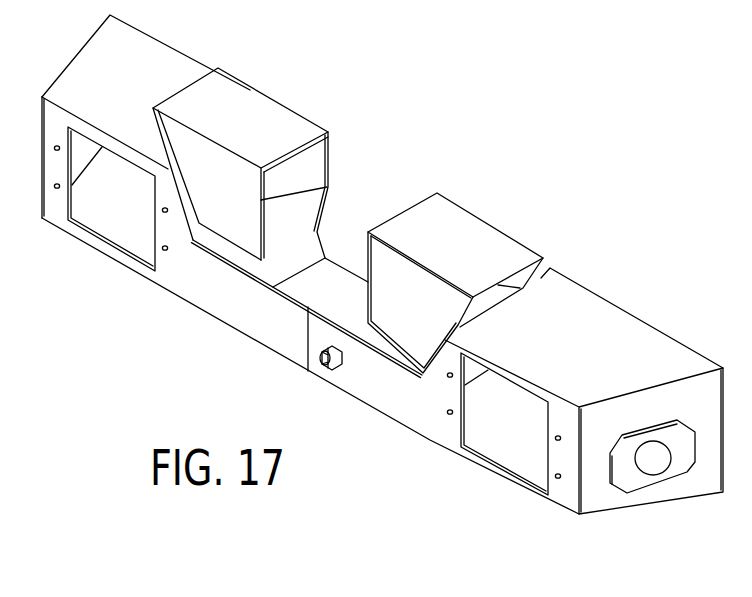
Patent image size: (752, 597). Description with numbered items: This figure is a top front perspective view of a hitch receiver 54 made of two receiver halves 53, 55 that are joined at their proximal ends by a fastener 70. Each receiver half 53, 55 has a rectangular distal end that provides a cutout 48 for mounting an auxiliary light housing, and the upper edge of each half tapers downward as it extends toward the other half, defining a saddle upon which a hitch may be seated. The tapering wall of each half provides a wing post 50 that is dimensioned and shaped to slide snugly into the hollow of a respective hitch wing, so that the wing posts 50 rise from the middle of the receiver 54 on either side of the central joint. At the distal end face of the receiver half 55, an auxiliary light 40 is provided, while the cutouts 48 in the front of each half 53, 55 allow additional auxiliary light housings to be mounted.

The hitch receiver 54 is at (615, 168).
The receiver half 53 is at (83, 72).
The receiver half 55 is at (633, 345).
The cutout 48 is at (100, 240).
The wing post 50 is at (260, 110).
The fastener 70 is at (313, 353).
The auxiliary light 40 is at (637, 483).